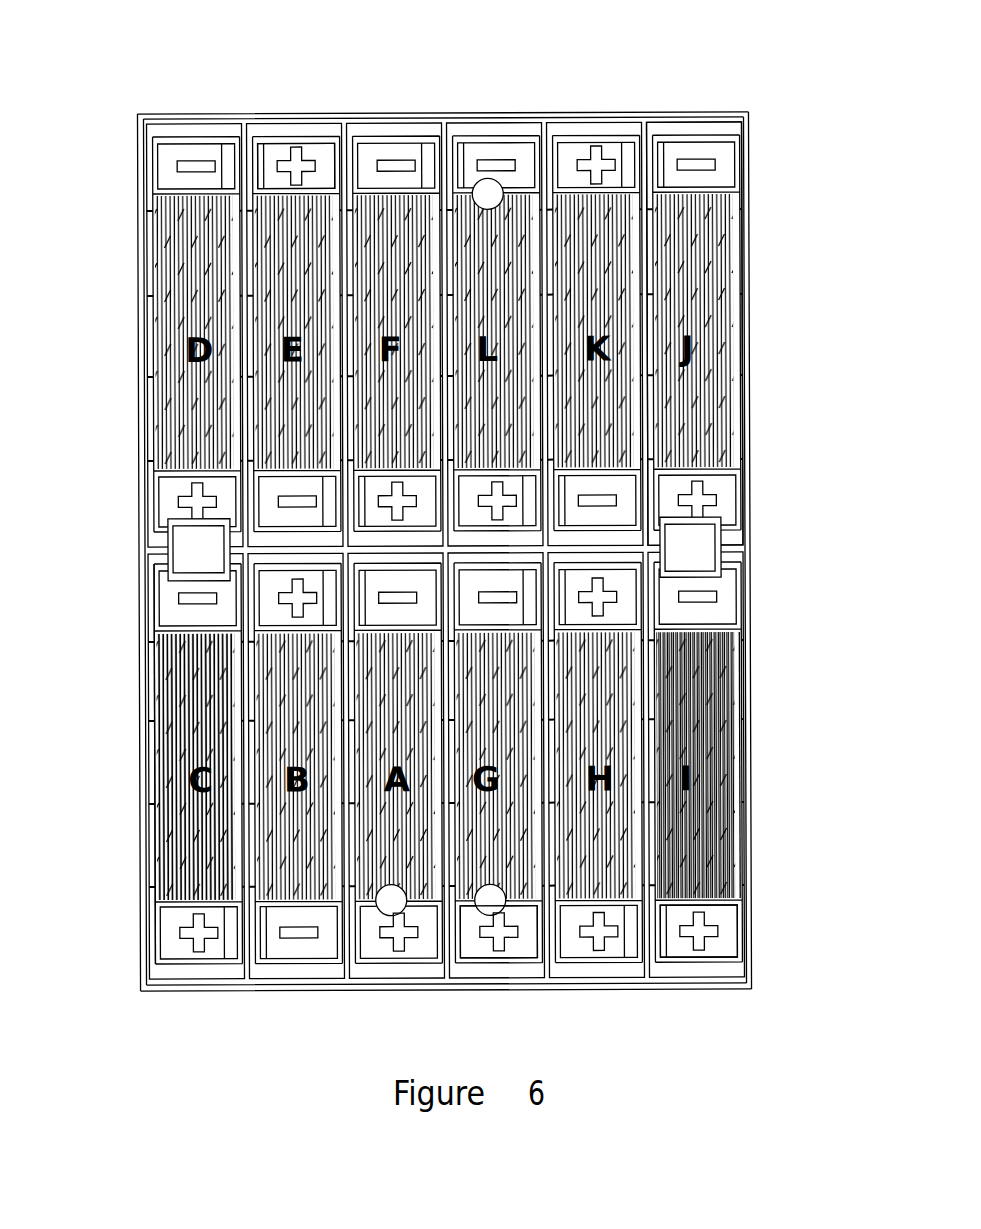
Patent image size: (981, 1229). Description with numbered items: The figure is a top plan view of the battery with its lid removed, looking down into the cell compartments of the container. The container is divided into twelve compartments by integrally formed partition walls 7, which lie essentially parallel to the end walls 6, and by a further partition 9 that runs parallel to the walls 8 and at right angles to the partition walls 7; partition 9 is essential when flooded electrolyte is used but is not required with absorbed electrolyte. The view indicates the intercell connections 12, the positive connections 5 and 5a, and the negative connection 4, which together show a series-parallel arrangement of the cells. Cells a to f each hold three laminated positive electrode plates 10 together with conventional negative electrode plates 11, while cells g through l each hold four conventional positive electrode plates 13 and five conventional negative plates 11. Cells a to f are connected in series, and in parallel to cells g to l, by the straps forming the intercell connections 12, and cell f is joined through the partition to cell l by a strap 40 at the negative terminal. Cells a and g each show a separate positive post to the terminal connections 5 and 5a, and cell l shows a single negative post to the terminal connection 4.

The intercell connections 12 is at (268, 134).
The strap 40 is at (421, 150).
The negative connection 4 is at (481, 182).
The walls 8 is at (560, 100).
The partition walls 7 is at (643, 121).
The end walls 6 is at (743, 268).
The further partition 9 is at (683, 533).
The conventional positive electrode plates 13 is at (714, 652).
The laminated positive electrode plates 10 is at (155, 668).
The negative electrode plates 11 is at (180, 692).
The positive connection 5a is at (374, 934).
The positive connection 5 is at (508, 938).